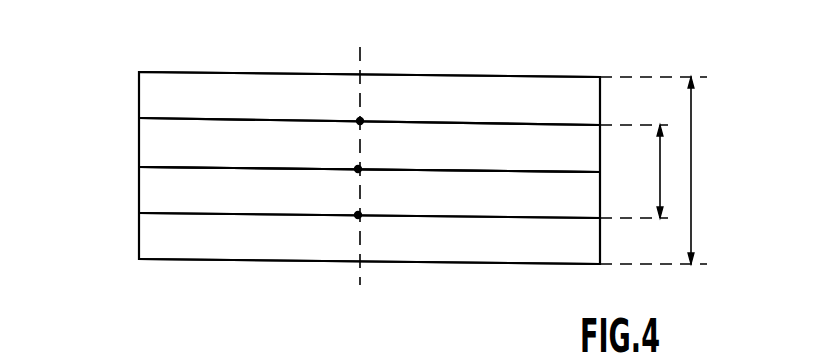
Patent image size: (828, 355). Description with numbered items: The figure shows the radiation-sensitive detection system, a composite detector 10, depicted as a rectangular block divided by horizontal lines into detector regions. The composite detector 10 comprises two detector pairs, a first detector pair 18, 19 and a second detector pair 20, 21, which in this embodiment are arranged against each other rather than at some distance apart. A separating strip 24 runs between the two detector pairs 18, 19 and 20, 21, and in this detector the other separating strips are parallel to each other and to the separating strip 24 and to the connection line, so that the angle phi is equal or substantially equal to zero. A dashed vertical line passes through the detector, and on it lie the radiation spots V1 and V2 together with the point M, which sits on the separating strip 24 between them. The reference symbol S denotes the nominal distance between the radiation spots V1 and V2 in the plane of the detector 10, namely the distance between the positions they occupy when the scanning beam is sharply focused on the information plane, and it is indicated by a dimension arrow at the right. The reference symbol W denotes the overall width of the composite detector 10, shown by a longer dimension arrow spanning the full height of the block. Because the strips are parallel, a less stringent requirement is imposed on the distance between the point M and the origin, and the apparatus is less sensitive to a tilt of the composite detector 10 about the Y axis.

The composite detector 10 is at (522, 57).
The detector 18 is at (147, 93).
The detector 19 is at (150, 141).
The detector 20 is at (150, 190).
The detector 21 is at (145, 233).
The separating strip 24 is at (152, 167).
The radiation spot V1 is at (360, 121).
The radiation spot V2 is at (358, 215).
The point M is at (358, 169).
The nominal distance S is at (654, 171).
The overall width W is at (703, 170).